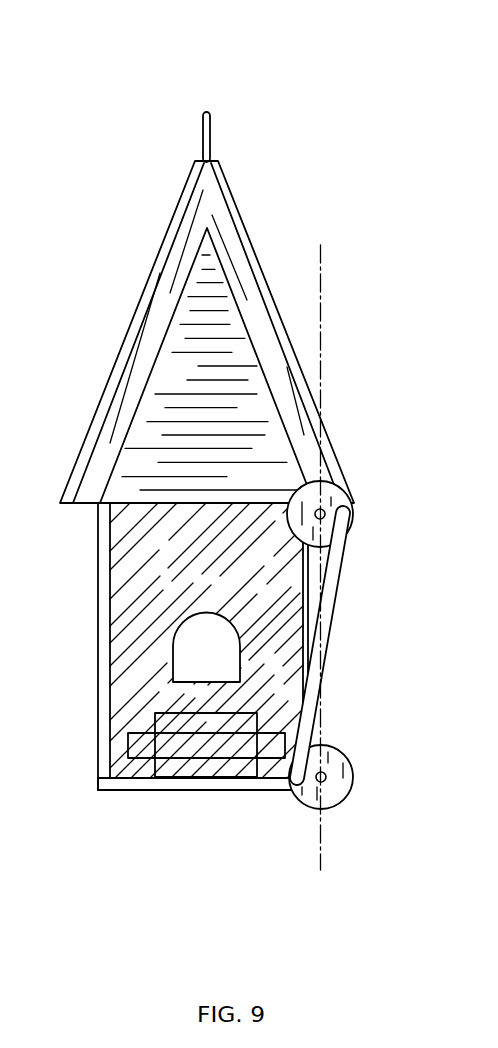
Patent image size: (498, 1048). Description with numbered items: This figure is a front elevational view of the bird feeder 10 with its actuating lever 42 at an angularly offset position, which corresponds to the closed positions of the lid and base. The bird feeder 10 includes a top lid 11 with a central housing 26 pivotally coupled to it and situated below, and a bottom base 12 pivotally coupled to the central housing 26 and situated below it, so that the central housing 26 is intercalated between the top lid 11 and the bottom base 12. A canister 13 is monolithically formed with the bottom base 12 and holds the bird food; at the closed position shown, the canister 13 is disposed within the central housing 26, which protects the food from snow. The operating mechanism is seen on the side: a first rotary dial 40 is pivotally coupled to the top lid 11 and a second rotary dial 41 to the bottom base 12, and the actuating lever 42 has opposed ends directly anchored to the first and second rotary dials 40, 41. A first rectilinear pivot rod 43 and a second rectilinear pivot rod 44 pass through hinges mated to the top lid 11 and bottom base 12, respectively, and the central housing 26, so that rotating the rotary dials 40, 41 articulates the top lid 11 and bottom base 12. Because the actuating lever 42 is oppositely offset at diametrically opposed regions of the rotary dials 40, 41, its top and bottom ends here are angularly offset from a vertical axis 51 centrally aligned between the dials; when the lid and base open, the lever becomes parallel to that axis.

The bird feeder 10 is at (270, 125).
The top lid 11 is at (152, 318).
The bottom base 12 is at (128, 783).
The canister 13 is at (133, 739).
The central housing 26 is at (122, 612).
The first rotary dial 40 is at (348, 495).
The second rotary dial 41 is at (349, 762).
The actuating lever 42 is at (328, 604).
The first rectilinear pivot rod 43 is at (322, 510).
The second rectilinear pivot rod 44 is at (326, 780).
The vertical axis 51 is at (321, 326).